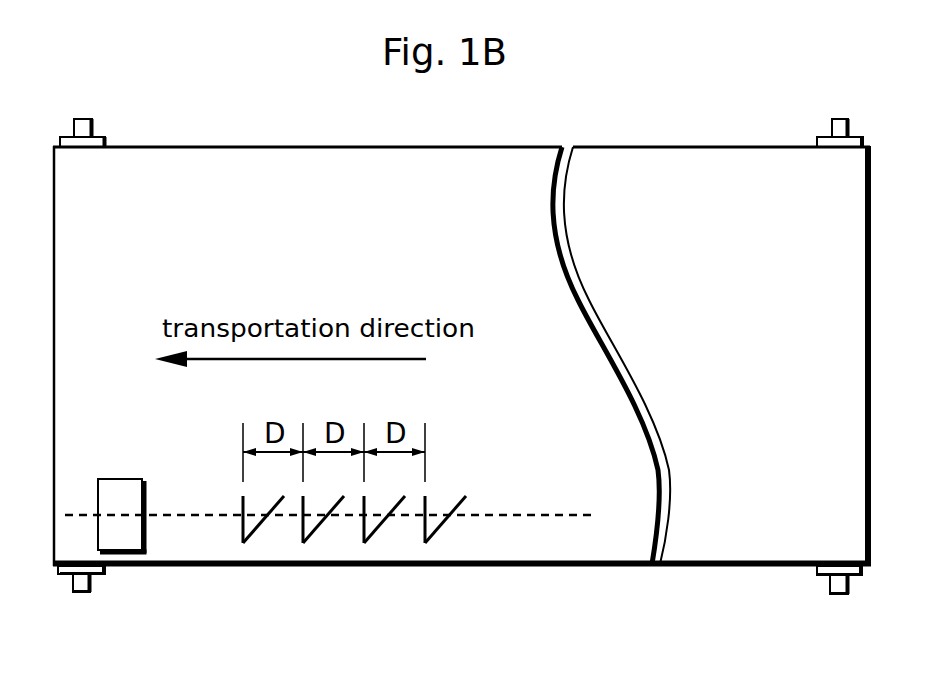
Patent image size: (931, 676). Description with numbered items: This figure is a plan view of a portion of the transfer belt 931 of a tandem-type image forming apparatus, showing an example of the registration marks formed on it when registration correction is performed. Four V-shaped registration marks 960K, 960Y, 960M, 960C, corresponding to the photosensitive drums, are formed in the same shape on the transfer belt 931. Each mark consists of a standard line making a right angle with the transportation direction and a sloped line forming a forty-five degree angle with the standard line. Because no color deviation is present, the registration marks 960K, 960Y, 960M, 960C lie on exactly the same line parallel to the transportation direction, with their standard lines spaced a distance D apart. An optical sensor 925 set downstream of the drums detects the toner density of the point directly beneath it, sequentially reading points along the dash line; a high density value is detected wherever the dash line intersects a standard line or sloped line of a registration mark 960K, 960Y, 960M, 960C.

The transfer belt 931 is at (665, 163).
The optical sensor 925 is at (122, 479).
The registration mark 960K is at (253, 531).
The registration mark 960Y is at (313, 531).
The registration mark 960M is at (374, 531).
The registration mark 960C is at (435, 531).